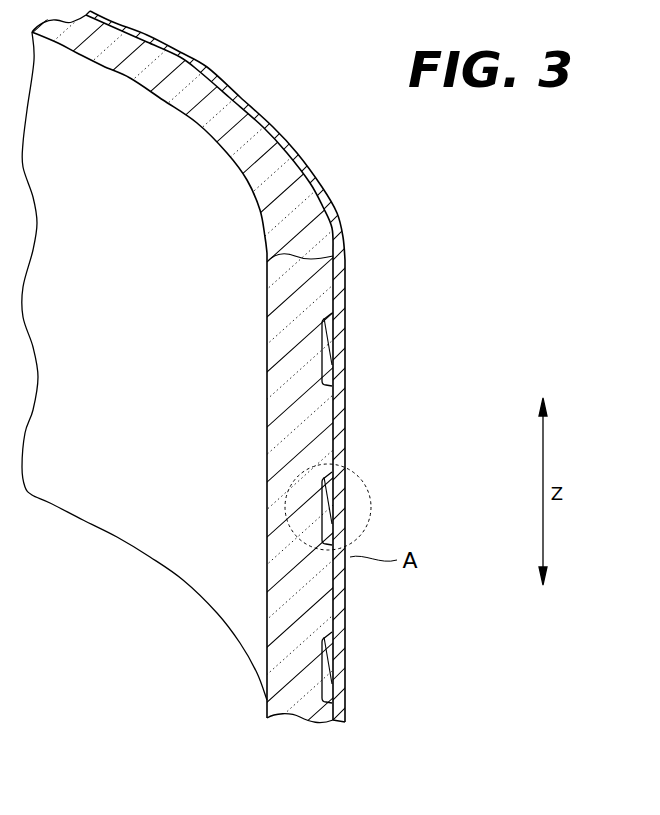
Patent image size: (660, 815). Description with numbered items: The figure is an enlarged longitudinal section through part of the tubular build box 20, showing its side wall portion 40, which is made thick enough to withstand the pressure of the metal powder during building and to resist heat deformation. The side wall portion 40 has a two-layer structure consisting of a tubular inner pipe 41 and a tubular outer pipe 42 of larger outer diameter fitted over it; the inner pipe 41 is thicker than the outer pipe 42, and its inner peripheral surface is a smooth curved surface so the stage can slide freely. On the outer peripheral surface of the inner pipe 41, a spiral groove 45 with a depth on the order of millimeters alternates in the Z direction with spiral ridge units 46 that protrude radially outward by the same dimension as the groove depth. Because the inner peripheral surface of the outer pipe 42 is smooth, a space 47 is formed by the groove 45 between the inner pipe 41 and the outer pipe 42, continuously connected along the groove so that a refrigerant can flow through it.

The build box 20 is at (330, 407).
The side wall portion 40 is at (267, 730).
The inner pipe 41 is at (276, 679).
The outer pipe 42 is at (347, 707).
The groove 45 is at (327, 352).
The ridge unit 46 is at (337, 425).
The space 47 is at (345, 360).